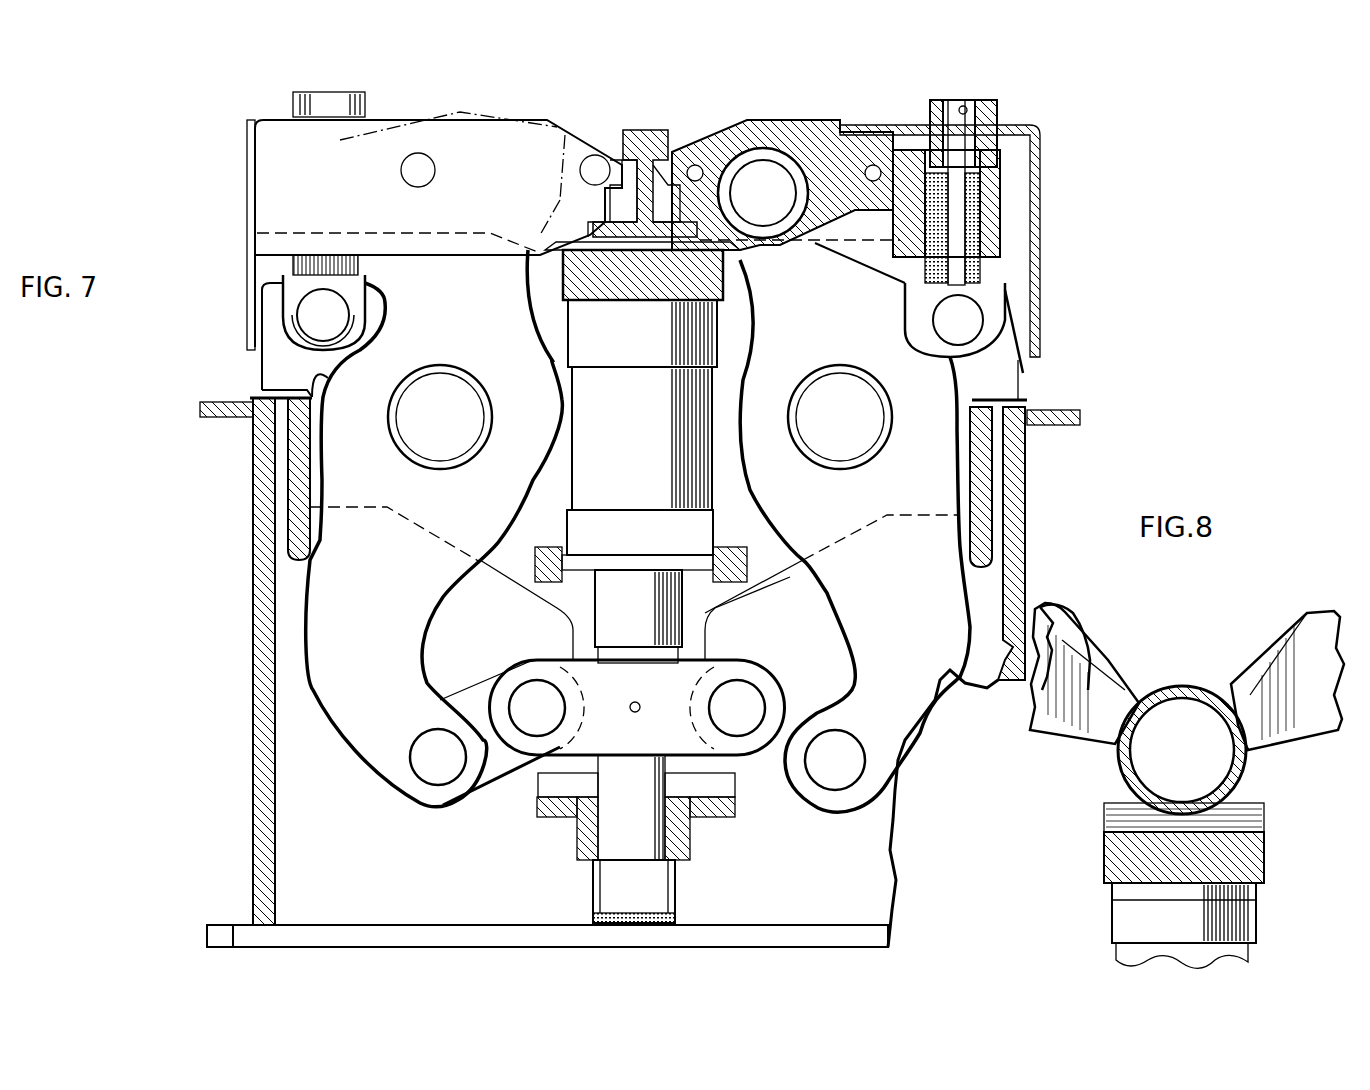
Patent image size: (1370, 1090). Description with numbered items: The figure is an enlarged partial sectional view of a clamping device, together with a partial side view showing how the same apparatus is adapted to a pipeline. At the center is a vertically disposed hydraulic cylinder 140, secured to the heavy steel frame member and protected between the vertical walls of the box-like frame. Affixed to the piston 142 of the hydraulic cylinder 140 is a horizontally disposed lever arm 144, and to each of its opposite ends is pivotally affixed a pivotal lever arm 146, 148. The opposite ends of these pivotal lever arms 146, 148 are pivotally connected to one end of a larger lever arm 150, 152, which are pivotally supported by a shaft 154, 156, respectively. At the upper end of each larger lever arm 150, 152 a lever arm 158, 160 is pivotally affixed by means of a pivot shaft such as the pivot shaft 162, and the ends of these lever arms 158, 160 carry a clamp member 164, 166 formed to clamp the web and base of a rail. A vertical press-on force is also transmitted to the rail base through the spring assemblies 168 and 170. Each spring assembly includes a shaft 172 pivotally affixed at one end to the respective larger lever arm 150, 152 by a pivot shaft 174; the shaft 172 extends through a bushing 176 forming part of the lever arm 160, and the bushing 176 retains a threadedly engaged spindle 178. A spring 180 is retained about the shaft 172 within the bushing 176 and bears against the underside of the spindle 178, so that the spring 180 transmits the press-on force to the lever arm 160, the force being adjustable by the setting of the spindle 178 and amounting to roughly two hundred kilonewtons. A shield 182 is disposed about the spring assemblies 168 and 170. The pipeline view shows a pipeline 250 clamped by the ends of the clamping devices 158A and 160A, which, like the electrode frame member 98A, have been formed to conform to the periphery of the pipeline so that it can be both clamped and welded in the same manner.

In FIG. 7, the hydraulic cylinder 140 is at (648, 416).
In FIG. 7, the piston 142 is at (578, 812).
In FIG. 7, the lever arm 144 is at (668, 737).
In FIG. 7, the pivotal lever arm 146 is at (485, 795).
In FIG. 7, the pivotal lever arm 148 is at (773, 775).
In FIG. 7, the larger lever arm 150 is at (325, 683).
In FIG. 7, the larger lever arm 152 is at (947, 667).
In FIG. 7, the shaft 154 is at (446, 416).
In FIG. 7, the shaft 156 is at (847, 416).
In FIG. 7, the lever arm 158 is at (607, 158).
In FIG. 7, the lever arm 160 is at (697, 150).
In FIG. 7, the pivot shaft 162 is at (770, 175).
In FIG. 7, the clamp member 164 is at (520, 224).
In FIG. 7, the clamp member 166 is at (650, 130).
In FIG. 7, the spring assembly 168 is at (1018, 163).
In FIG. 7, the spring assembly 170 is at (354, 79).
In FIG. 7, the shaft 172 is at (970, 200).
In FIG. 7, the pivot shaft 174 is at (968, 318).
In FIG. 7, the bushing 176 is at (1018, 220).
In FIG. 7, the spindle 178 is at (997, 128).
In FIG. 7, the spring 180 is at (990, 268).
In FIG. 7, the shield 182 is at (247, 307).
In FIG. 8, the clamping device 158A is at (1086, 646).
In FIG. 8, the clamping device 160A is at (1276, 650).
In FIG. 8, the pipeline 250 is at (1117, 770).
In FIG. 8, the electrode frame member 98A is at (1248, 855).